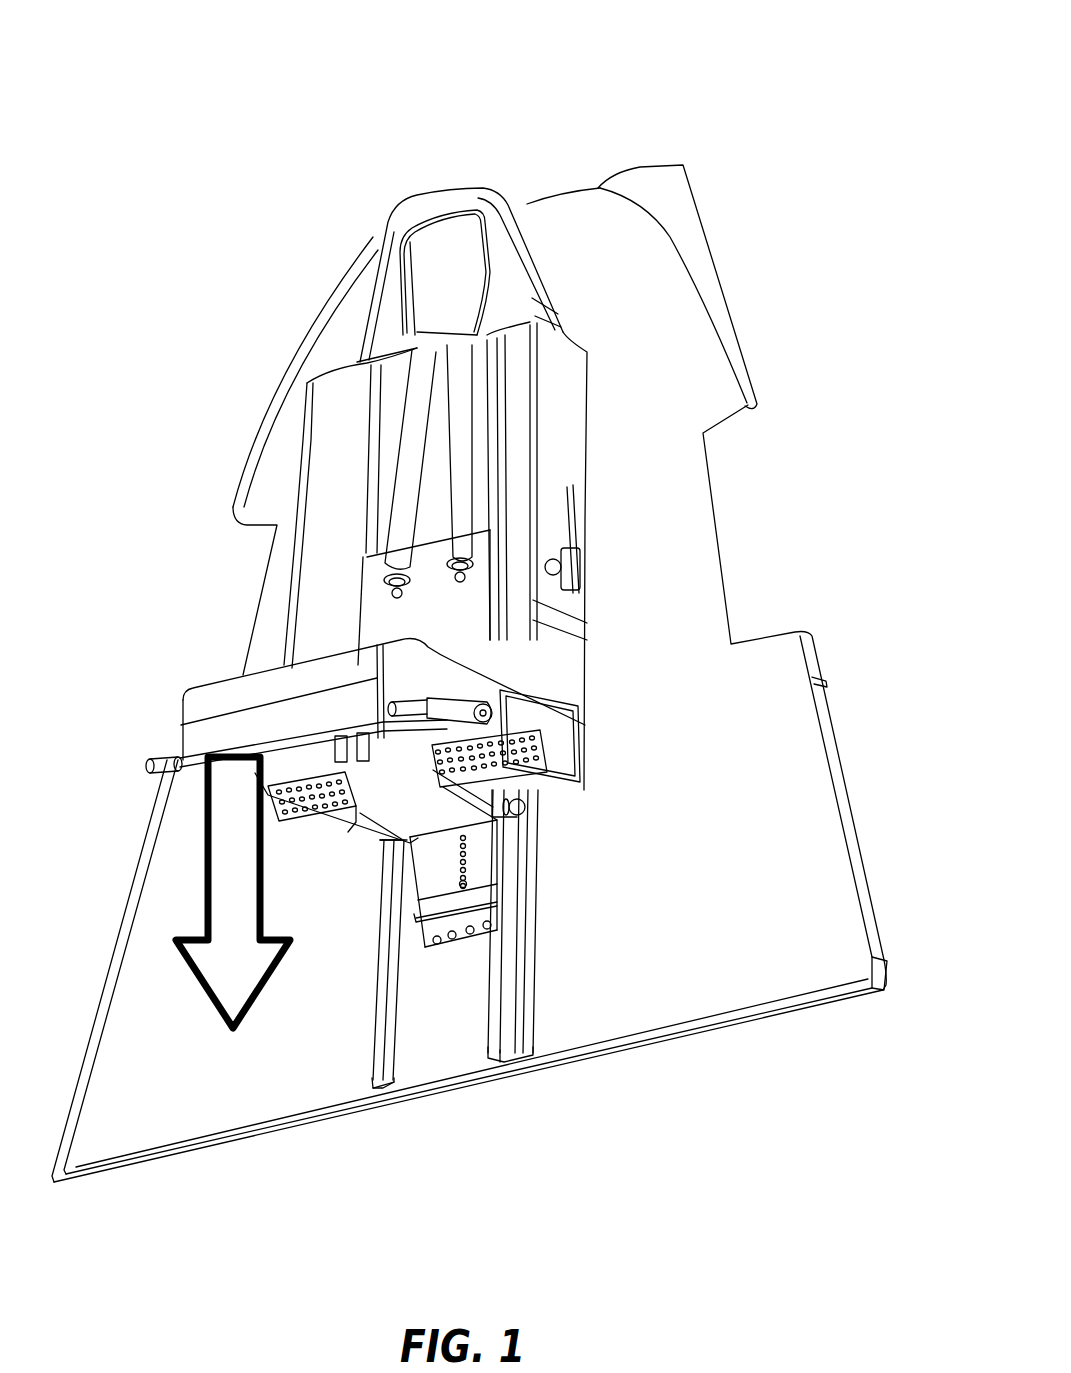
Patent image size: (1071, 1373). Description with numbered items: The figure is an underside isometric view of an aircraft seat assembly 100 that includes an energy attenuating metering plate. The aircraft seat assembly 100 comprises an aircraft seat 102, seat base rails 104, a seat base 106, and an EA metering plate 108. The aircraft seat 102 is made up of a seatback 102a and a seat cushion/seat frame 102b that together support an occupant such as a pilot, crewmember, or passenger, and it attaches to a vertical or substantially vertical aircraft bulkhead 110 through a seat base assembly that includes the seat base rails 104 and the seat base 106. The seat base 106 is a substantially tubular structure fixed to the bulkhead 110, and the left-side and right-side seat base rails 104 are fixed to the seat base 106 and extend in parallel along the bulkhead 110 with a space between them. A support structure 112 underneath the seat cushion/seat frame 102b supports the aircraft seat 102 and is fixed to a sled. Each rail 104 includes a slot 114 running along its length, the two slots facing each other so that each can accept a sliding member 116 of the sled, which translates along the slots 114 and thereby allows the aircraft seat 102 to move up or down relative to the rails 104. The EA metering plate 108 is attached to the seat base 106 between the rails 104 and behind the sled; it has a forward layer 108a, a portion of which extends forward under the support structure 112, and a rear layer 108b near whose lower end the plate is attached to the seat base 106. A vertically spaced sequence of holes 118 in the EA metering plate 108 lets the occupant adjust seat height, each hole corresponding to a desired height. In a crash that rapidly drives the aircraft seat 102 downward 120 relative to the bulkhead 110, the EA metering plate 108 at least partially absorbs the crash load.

The aircraft seat assembly 100 is at (150, 44).
The aircraft seat 102 is at (562, 437).
The seatback 102a is at (342, 452).
The seat cushion/seat frame 102b is at (268, 697).
The seat base rails 104 is at (383, 942).
The seat base 106 is at (472, 1017).
The EA metering plate 108 is at (488, 853).
The forward layer 108a is at (483, 887).
The rear layer 108b is at (483, 915).
The aircraft bulkhead 110 is at (617, 525).
The support structure 112 is at (375, 795).
The slot 114 is at (380, 1095).
The sliding member 116 is at (520, 810).
The holes 118 is at (461, 890).
The downward direction 120 is at (230, 860).